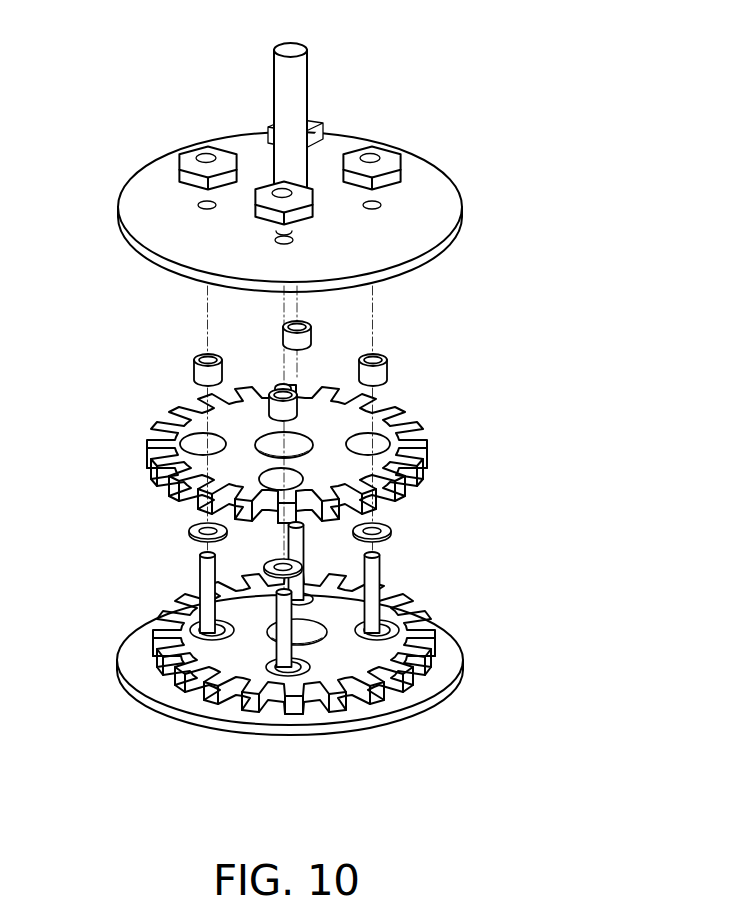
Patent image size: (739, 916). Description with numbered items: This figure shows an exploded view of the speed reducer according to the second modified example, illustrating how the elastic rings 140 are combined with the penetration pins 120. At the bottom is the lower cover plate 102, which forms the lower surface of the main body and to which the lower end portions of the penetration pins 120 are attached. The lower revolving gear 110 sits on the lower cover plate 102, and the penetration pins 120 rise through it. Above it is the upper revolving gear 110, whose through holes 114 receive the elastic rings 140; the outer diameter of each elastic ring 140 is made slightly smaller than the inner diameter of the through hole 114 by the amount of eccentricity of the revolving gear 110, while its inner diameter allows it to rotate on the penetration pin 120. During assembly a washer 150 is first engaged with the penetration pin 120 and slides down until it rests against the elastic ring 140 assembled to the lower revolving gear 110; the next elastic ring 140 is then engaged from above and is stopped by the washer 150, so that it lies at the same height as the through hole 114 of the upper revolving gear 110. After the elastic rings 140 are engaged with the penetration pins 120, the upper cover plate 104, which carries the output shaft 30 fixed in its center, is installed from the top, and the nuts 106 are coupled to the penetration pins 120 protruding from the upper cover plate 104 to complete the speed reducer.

The output shaft 30 is at (300, 44).
The lower cover plate 102 is at (398, 712).
The upper cover plate 104 is at (462, 208).
The nut 106 is at (277, 218).
The revolving gear 110 is at (420, 431).
The through hole 114 is at (262, 474).
The penetration pin 120 is at (276, 657).
The elastic ring 140 is at (270, 403).
The washer 150 is at (392, 528).